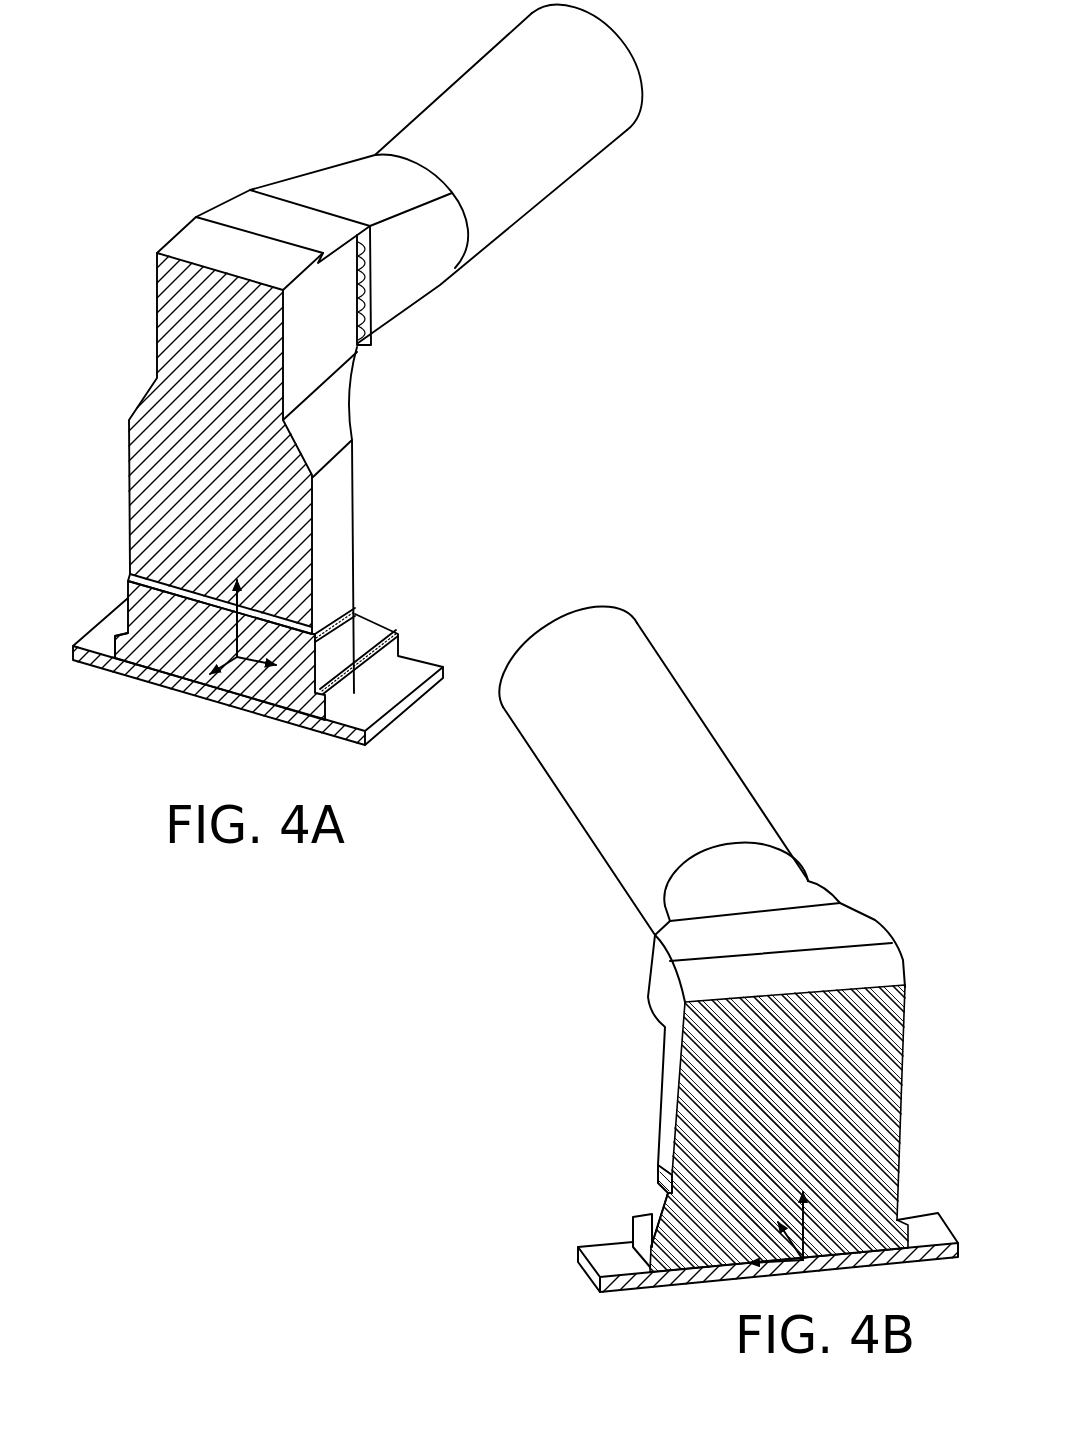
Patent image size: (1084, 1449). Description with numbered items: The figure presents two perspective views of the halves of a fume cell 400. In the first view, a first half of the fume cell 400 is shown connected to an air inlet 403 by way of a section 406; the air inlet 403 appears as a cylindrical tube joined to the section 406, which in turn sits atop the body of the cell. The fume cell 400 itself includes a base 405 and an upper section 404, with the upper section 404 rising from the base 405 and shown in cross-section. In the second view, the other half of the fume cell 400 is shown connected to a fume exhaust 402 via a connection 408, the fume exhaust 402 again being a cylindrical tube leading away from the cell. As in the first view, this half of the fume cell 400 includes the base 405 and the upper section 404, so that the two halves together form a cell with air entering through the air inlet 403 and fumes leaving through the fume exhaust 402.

In FIG. 4A, the fume cell 400 is at (134, 40).
In FIG. 4B, the fume cell 400 is at (642, 584).
In FIG. 4B, the fume exhaust 402 is at (552, 783).
In FIG. 4A, the air inlet 403 is at (432, 103).
In FIG. 4A, the upper section 404 is at (353, 405).
In FIG. 4B, the upper section 404 is at (663, 1075).
In FIG. 4A, the base 405 is at (345, 640).
In FIG. 4B, the base 405 is at (663, 1190).
In FIG. 4A, the section 406 is at (330, 167).
In FIG. 4B, the connection 408 is at (750, 790).